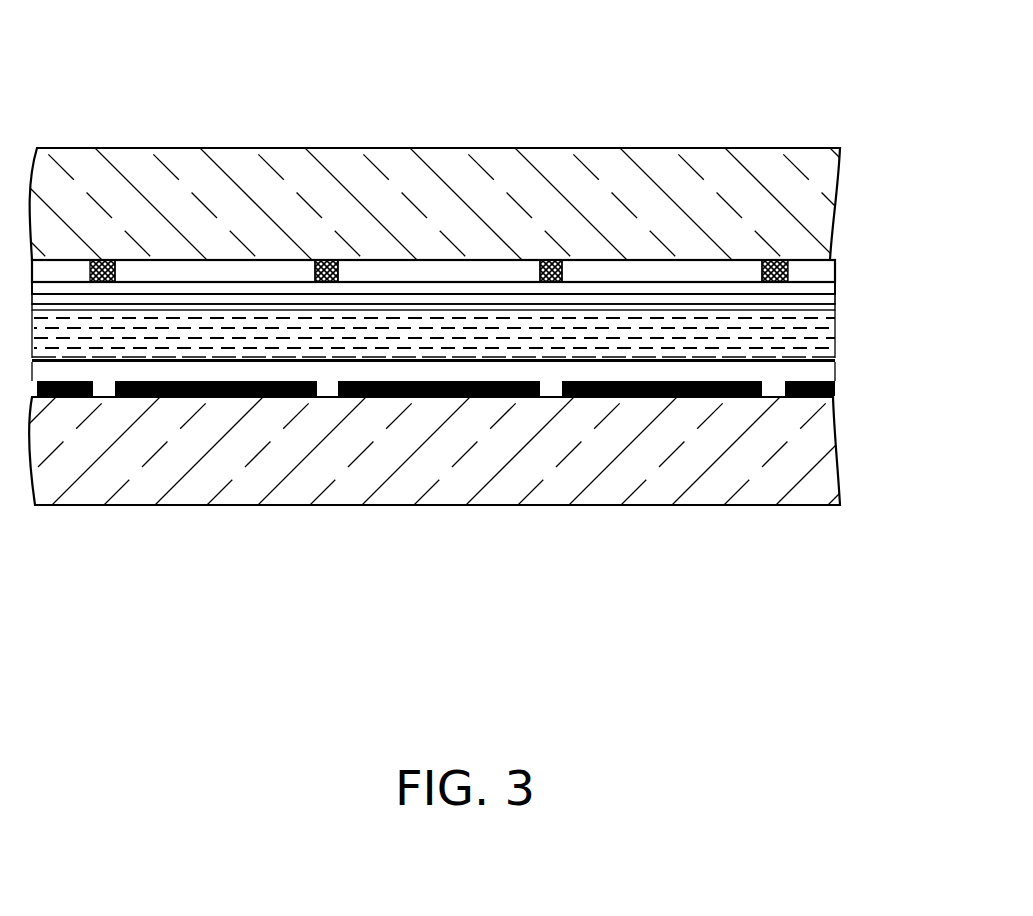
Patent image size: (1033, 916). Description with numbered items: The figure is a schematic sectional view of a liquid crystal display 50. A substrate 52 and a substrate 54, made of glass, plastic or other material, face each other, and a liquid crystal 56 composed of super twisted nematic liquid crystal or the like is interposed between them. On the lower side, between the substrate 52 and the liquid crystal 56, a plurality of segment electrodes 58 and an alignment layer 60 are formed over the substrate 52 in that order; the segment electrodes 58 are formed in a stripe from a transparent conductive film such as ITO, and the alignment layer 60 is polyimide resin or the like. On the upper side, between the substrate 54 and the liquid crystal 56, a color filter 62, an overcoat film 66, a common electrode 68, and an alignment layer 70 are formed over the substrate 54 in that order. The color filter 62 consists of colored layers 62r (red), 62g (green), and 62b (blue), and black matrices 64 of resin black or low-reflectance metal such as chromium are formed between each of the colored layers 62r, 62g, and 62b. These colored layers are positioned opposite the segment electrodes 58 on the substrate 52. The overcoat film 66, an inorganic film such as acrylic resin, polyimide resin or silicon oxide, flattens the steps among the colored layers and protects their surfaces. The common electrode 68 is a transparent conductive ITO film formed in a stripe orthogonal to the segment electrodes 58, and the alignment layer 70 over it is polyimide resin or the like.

The liquid crystal display 50 is at (811, 99).
The substrate 52 is at (443, 498).
The substrate 54 is at (637, 148).
The liquid crystal 56 is at (838, 345).
The segment electrodes 58 is at (643, 397).
The alignment layer 60 is at (838, 365).
The color filter 62 is at (472, 188).
The colored layer (red) 62r is at (178, 266).
The colored layer (green) 62g is at (480, 266).
The colored layer (blue) 62b is at (702, 266).
The black matrices 64 is at (100, 260).
The overcoat film 66 is at (838, 288).
The common electrode 68 is at (838, 299).
The alignment layer 70 is at (838, 307).